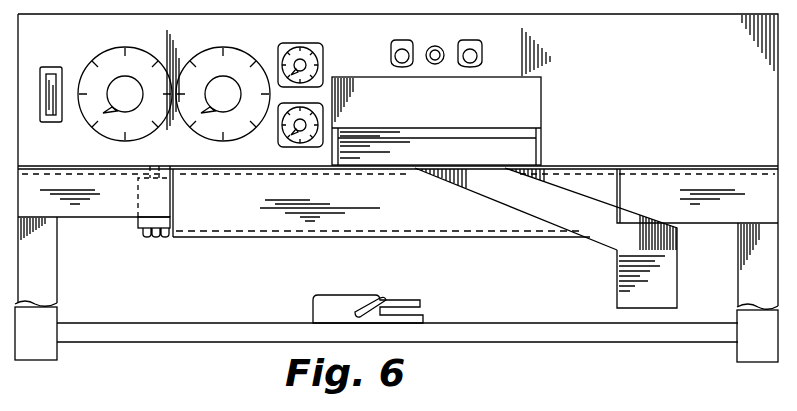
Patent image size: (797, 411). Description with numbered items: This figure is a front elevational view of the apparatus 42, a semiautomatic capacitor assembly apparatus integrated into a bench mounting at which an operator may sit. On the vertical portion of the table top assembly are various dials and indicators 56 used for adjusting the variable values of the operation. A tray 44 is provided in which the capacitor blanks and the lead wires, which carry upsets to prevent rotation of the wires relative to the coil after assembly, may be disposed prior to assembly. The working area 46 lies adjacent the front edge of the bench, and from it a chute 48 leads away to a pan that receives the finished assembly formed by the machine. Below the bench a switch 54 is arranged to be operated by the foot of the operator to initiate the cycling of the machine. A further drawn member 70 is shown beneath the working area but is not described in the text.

The apparatus 42 is at (216, 258).
The tray 44 is at (514, 153).
The working area 46 is at (427, 220).
The chute 48 is at (600, 237).
The switch 54 is at (407, 297).
The dials and indicators 56 is at (262, 39).
The support beam 70 is at (277, 210).